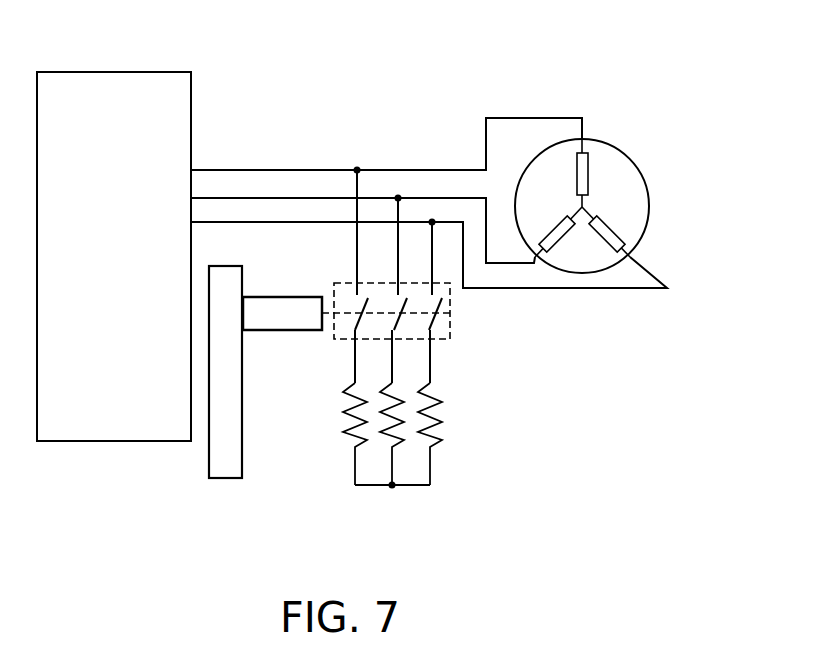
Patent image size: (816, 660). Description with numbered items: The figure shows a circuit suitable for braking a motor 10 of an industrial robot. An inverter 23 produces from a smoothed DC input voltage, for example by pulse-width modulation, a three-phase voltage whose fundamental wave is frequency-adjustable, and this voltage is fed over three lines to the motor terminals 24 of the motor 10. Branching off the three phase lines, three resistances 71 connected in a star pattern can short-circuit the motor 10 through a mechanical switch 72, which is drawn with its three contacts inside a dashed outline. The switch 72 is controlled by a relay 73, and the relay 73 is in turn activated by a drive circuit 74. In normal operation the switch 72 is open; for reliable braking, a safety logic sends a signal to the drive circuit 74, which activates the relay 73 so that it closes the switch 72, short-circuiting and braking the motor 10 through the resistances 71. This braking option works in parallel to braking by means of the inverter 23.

The motor 10 is at (621, 172).
The inverter 23 is at (130, 441).
The motor terminals 24 is at (583, 138).
The resistances 71 is at (378, 392).
The mechanical switch 72 is at (450, 327).
The relay 73 is at (303, 330).
The drive circuit 74 is at (242, 445).